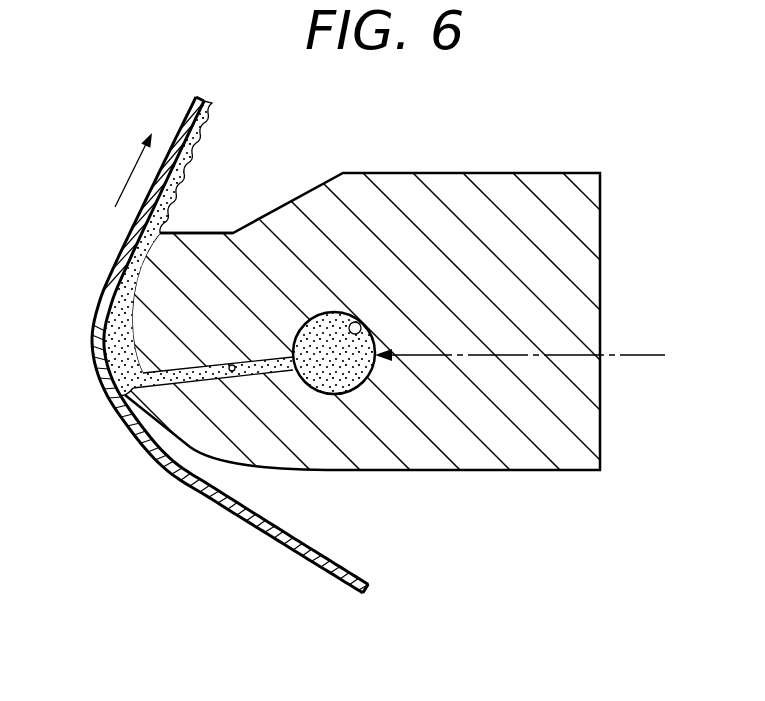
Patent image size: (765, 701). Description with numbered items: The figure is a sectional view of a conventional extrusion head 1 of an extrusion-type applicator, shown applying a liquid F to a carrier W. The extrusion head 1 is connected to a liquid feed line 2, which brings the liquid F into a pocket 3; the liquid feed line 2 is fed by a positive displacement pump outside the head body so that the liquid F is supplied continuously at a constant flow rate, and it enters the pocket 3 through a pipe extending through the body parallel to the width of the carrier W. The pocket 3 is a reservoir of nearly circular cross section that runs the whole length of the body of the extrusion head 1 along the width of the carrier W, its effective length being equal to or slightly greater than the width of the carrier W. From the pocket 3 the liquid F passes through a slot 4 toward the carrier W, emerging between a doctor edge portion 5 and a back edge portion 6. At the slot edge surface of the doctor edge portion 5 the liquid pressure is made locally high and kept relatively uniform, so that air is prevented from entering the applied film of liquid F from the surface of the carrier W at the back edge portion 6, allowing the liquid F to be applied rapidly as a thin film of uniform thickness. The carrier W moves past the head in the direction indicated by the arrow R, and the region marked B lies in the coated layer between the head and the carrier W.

The extrusion head 1 is at (402, 152).
The liquid feed line 2 is at (520, 344).
The pocket 3 is at (360, 324).
The slot 4 is at (232, 365).
The doctor edge portion 5 is at (162, 236).
The back edge portion 6 is at (138, 442).
The bonding layer B is at (131, 316).
The liquid F is at (197, 147).
The carrier W is at (200, 481).
The direction arrow R is at (130, 170).